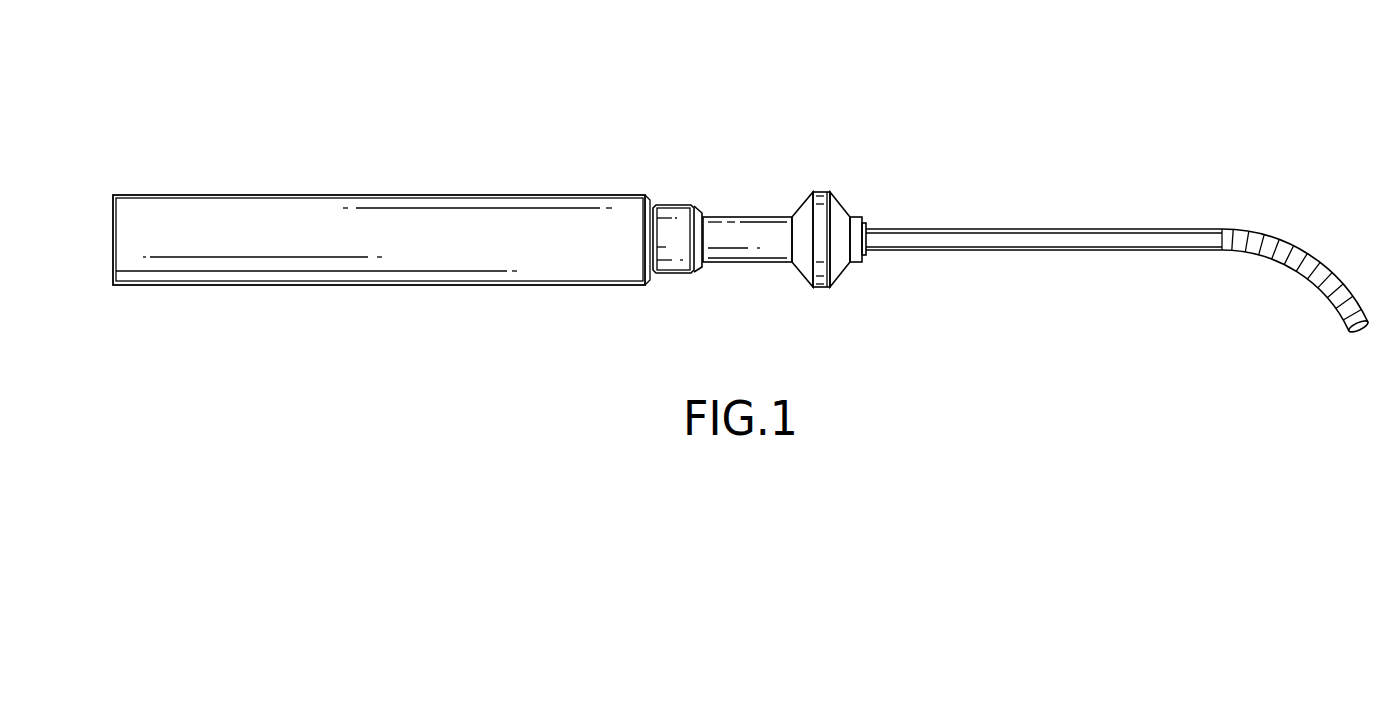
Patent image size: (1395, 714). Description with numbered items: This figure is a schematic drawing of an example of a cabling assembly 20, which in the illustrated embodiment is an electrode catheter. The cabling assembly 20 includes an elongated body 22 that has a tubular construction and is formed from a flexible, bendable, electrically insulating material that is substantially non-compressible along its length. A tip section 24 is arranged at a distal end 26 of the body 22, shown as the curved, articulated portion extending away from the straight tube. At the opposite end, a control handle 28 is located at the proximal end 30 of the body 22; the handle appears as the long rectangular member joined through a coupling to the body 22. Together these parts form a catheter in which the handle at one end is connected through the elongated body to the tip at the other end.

The cabling assembly 20 is at (118, 128).
The elongated body 22 is at (948, 240).
The tip section 24 is at (1337, 313).
The distal end 26 is at (1231, 233).
The control handle 28 is at (285, 215).
The proximal end 30 is at (867, 238).